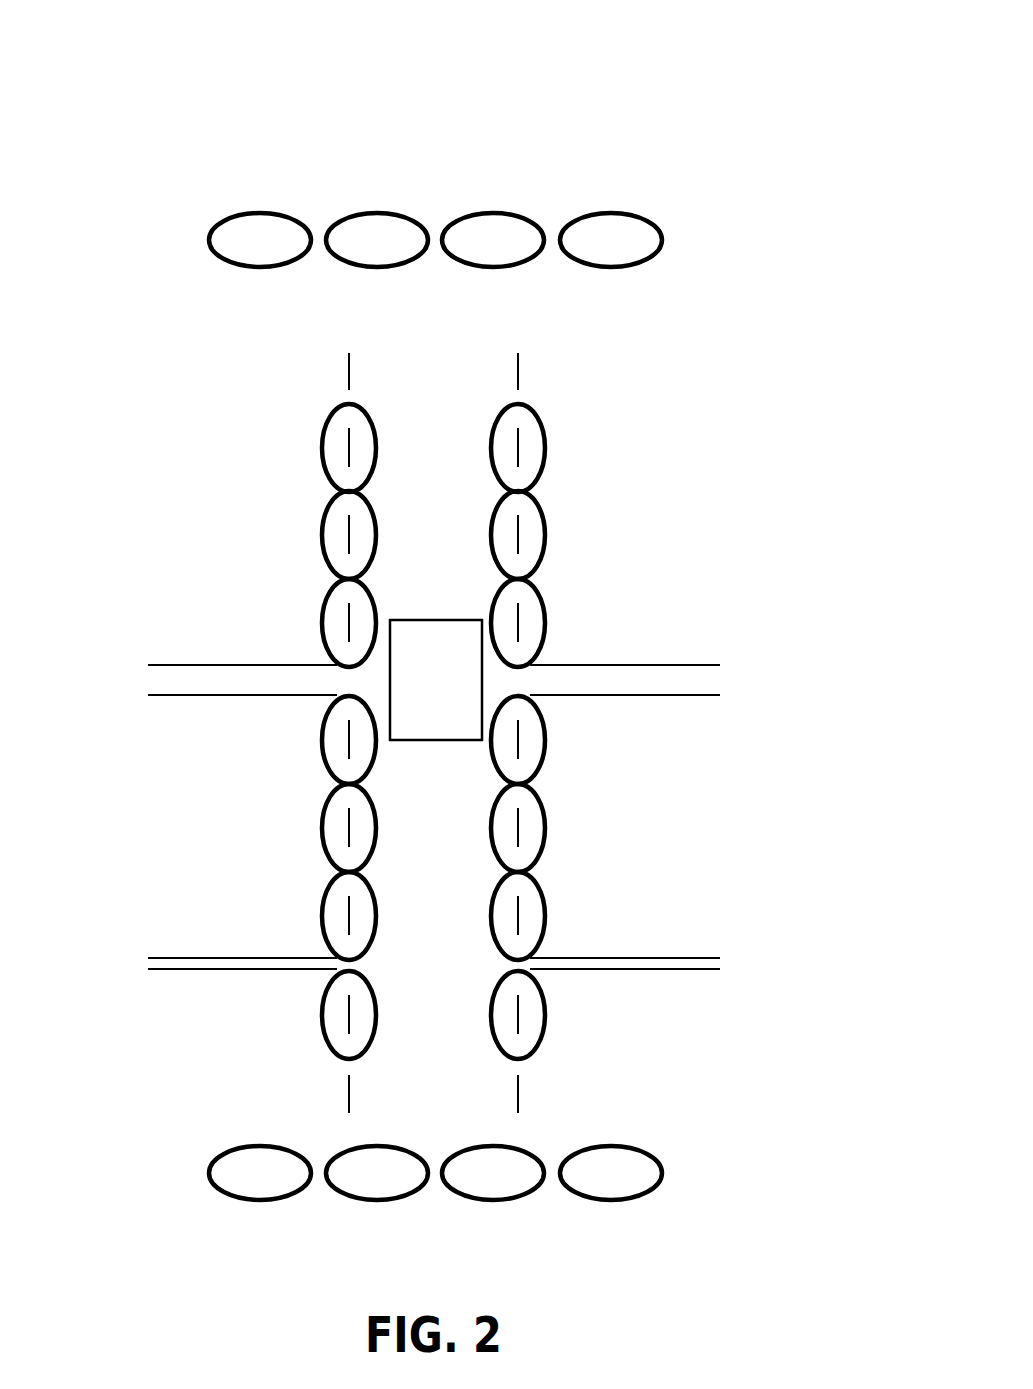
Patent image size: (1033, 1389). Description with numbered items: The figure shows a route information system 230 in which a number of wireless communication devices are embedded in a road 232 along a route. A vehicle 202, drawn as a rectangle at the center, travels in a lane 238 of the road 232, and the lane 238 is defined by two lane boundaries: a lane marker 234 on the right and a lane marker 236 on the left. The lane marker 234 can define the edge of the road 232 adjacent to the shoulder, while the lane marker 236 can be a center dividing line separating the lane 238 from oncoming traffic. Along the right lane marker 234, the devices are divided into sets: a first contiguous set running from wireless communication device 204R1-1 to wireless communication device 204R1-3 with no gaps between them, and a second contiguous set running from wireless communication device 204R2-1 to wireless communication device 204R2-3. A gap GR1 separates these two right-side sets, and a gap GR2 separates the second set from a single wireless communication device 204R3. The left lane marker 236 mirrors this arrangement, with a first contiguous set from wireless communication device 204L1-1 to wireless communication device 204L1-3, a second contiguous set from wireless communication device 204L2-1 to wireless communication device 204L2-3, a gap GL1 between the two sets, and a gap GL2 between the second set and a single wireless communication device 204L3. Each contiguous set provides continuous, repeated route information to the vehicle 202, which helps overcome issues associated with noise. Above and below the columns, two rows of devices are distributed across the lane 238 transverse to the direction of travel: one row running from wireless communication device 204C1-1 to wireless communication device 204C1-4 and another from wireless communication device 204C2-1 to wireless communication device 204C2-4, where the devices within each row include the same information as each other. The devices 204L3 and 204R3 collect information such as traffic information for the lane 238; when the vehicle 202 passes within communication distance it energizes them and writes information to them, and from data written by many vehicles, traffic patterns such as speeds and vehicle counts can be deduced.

The route information system 230 is at (751, 68).
The vehicle 202 is at (419, 694).
The wireless communication device 204C1-1 is at (235, 230).
The wireless communication device 204C1-4 is at (632, 230).
The wireless communication device 204C2-1 is at (233, 1180).
The wireless communication device 204C2-4 is at (625, 1182).
The wireless communication device 204L1-1 is at (331, 452).
The wireless communication device 204L1-3 is at (331, 623).
The wireless communication device 204L2-1 is at (331, 747).
The wireless communication device 204L2-3 is at (331, 917).
The wireless communication device 204L3 is at (331, 1025).
The wireless communication device 204R1-1 is at (536, 452).
The wireless communication device 204R1-3 is at (536, 623).
The wireless communication device 204R2-1 is at (536, 748).
The wireless communication device 204R2-3 is at (536, 917).
The wireless communication device 204R3 is at (536, 1026).
The road 232 is at (440, 372).
The lane marker 234 is at (521, 357).
The lane marker 236 is at (347, 357).
The lane 238 is at (440, 1085).
The gap GL1 is at (165, 717).
The gap GL2 is at (165, 995).
The gap GR1 is at (704, 717).
The gap GR2 is at (704, 995).